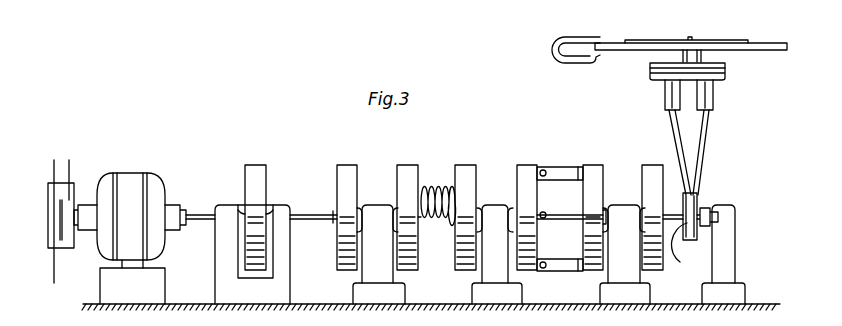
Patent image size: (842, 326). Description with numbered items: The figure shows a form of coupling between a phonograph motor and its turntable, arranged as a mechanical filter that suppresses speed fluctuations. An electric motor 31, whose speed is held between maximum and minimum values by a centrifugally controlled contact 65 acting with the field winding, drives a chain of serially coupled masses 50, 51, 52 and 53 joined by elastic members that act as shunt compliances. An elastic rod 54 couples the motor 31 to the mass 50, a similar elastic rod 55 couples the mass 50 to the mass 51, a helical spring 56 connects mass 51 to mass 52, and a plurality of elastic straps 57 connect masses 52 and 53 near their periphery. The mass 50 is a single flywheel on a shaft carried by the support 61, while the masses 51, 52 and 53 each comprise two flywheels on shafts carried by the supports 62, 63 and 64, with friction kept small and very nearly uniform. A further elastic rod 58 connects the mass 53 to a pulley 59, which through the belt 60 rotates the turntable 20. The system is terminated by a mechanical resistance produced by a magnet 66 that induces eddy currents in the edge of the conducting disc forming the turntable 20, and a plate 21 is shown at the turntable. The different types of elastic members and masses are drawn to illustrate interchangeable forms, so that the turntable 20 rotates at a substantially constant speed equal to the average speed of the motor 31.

The turntable 20 is at (632, 50).
The plate 21 is at (637, 42).
The electric motor 31 is at (131, 185).
The mass 50 is at (254, 176).
The mass 51 is at (405, 187).
The mass 52 is at (525, 187).
The mass 53 is at (650, 187).
The elastic rod 54 is at (199, 212).
The elastic rod 55 is at (311, 213).
The helical spring 56 is at (430, 200).
The elastic straps 57 is at (569, 176).
The elastic rod 58 is at (685, 244).
The pulley 59 is at (700, 213).
The belt 60 is at (700, 168).
The support 61 is at (228, 275).
The support 62 is at (375, 277).
The support 63 is at (490, 275).
The support 64 is at (628, 275).
The centrifugally controlled contact 65 is at (62, 219).
The magnet 66 is at (565, 66).